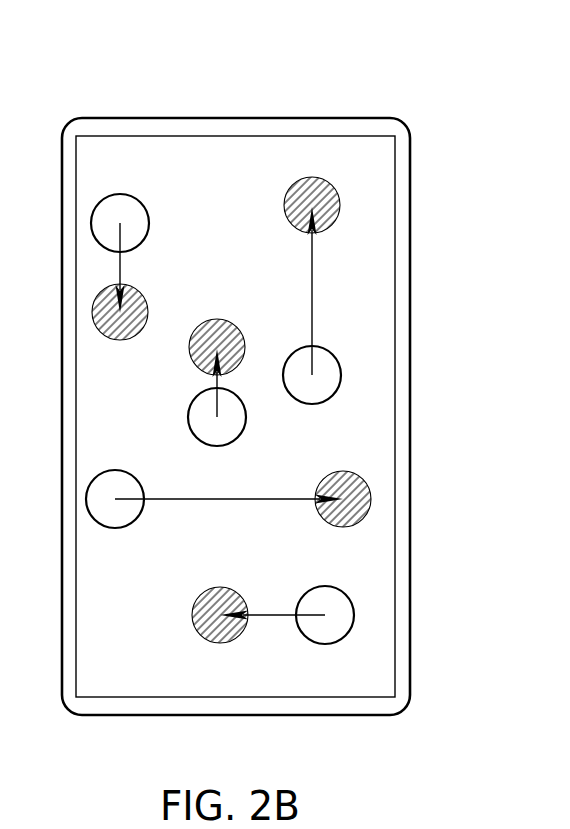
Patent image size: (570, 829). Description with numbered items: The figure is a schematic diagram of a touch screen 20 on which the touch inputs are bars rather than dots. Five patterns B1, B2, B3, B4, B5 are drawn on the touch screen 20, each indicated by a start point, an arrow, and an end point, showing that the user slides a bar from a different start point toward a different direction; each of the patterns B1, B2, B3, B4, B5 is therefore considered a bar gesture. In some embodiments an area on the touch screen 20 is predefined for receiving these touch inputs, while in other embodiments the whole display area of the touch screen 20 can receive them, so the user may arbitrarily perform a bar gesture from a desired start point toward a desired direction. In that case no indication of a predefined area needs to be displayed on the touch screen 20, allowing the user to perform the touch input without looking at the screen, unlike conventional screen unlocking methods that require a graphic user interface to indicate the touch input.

The touch screen 20 is at (432, 122).
The pattern B1 is at (137, 267).
The pattern B2 is at (321, 290).
The pattern B3 is at (228, 502).
The pattern B4 is at (273, 618).
The pattern B5 is at (194, 382).